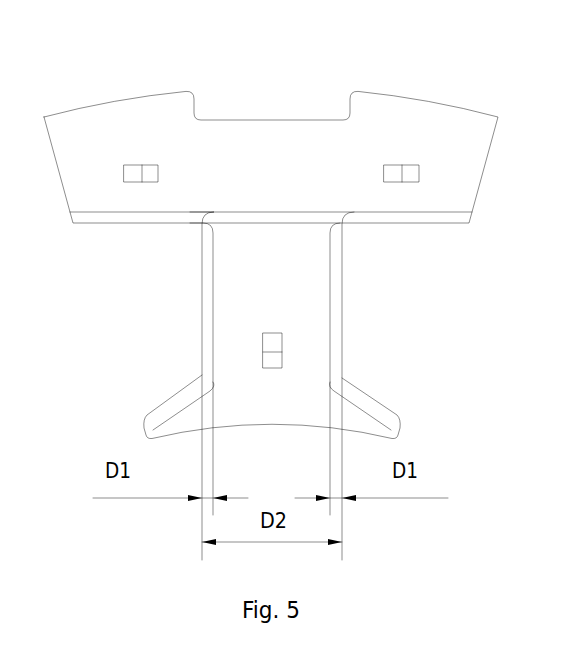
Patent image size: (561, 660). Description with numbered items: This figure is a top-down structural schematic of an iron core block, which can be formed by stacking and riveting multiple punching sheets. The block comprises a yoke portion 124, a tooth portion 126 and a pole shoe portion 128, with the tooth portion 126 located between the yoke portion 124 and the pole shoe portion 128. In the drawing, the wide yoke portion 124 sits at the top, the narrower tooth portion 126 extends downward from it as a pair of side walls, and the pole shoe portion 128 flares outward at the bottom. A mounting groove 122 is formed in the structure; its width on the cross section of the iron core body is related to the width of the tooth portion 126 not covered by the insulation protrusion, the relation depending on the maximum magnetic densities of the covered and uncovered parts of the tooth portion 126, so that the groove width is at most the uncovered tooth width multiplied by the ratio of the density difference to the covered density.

The mounting groove 122 is at (271, 295).
The yoke portion 124 is at (147, 122).
The tooth portion 126 is at (248, 287).
The pole shoe portion 128 is at (270, 417).